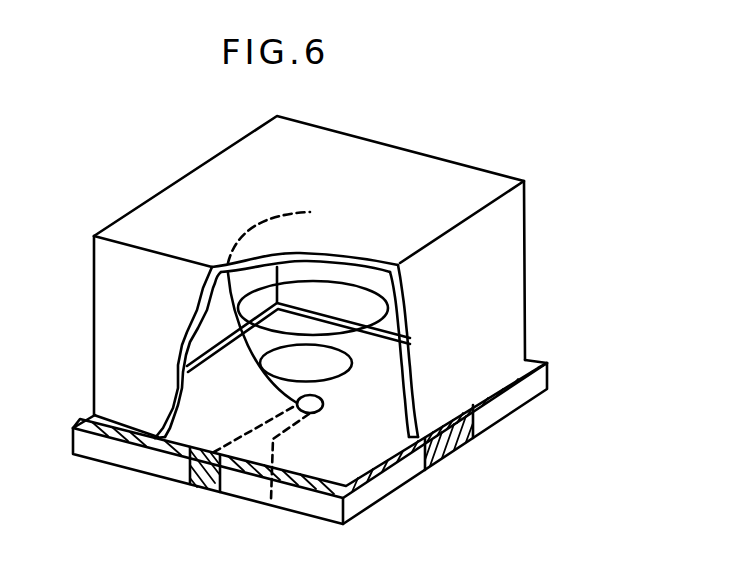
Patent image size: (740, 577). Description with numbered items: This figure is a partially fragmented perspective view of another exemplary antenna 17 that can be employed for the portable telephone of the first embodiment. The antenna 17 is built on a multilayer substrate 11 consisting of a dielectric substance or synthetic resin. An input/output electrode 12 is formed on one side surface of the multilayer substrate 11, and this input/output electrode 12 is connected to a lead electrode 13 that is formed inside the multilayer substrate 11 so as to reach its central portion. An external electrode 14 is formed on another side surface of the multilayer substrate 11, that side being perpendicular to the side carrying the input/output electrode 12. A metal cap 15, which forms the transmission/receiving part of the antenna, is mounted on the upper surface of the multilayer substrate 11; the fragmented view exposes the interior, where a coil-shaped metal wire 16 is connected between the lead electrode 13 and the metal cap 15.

The multilayer substrate 11 is at (86, 445).
The input/output electrode 12 is at (200, 488).
The lead electrode 13 is at (311, 413).
The external electrode 14 is at (460, 447).
The metal cap 15 is at (527, 218).
The coil-shaped metal wire 16 is at (353, 363).
The antenna 17 is at (177, 153).